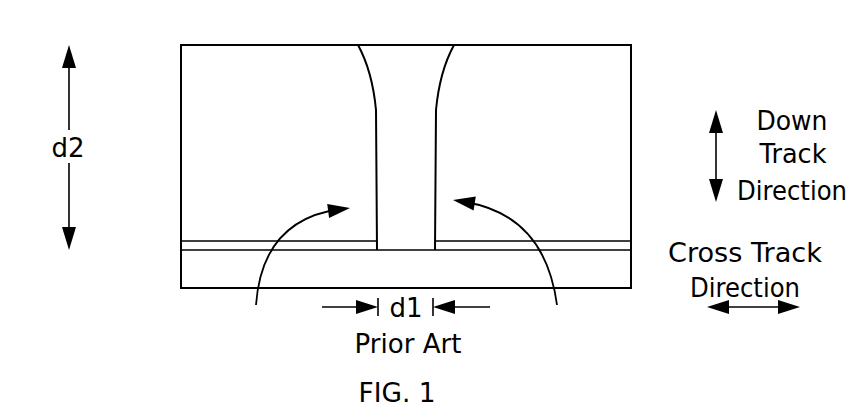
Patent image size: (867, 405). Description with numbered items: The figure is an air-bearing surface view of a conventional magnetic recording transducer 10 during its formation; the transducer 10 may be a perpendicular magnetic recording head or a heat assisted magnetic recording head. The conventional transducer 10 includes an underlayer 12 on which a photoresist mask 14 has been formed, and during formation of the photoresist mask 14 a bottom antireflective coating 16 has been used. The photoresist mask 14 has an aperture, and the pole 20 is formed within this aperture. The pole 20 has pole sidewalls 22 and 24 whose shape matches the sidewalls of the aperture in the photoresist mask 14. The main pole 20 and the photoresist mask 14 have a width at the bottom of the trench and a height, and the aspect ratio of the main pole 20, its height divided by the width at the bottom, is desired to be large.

The magnetic recording transducer 10 is at (16, 18).
The underlayer 12 is at (406, 267).
The photoresist mask 14 is at (408, 141).
The bottom antireflective coating 16 is at (202, 240).
The pole 20 is at (406, 147).
The pole sidewall 22 is at (295, 272).
The pole sidewall 24 is at (513, 269).